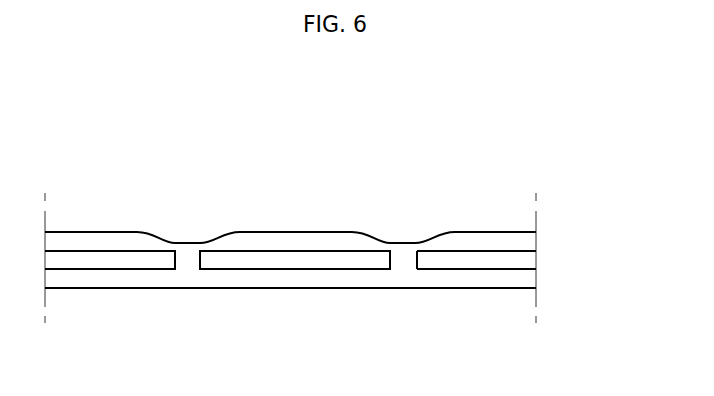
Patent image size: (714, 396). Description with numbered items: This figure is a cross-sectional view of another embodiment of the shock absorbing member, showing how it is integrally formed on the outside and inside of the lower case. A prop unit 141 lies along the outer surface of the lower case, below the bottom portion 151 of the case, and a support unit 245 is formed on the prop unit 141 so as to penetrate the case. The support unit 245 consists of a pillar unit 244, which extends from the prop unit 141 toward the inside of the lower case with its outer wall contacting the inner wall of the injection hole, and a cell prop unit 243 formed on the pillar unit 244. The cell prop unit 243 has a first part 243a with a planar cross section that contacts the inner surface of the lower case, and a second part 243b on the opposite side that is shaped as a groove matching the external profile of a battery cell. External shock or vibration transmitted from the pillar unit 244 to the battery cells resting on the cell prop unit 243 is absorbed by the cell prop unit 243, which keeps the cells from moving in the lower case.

The prop unit 141 is at (530, 278).
The bottom portion 151 is at (530, 259).
The pillar unit 244 is at (400, 261).
The support unit 245 is at (290, 155).
The cell prop unit 243 is at (438, 176).
The first part 243a is at (467, 232).
The second part 243b is at (378, 240).